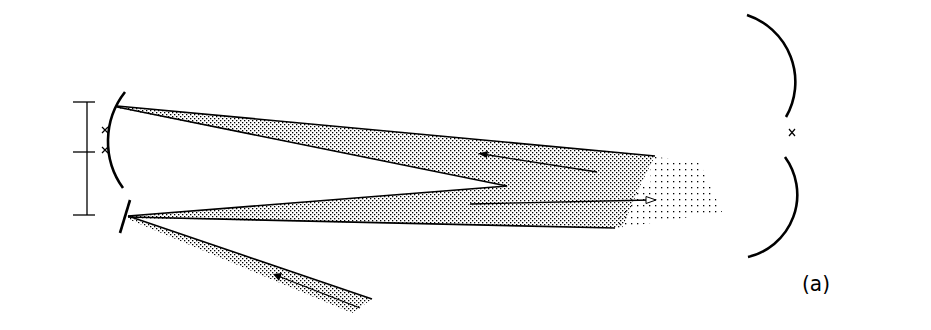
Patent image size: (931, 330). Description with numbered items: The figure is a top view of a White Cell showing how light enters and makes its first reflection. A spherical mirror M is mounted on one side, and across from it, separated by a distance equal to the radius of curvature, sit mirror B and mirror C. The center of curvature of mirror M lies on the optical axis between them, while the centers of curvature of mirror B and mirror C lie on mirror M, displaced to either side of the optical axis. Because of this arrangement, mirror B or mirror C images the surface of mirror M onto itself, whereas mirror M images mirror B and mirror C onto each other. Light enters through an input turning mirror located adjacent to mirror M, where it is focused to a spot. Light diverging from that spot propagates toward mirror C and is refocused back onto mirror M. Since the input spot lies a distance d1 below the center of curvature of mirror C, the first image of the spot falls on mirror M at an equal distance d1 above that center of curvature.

The mirror M is at (96, 111).
The mirror B is at (811, 66).
The mirror C is at (812, 207).
The distance d1 is at (80, 158).